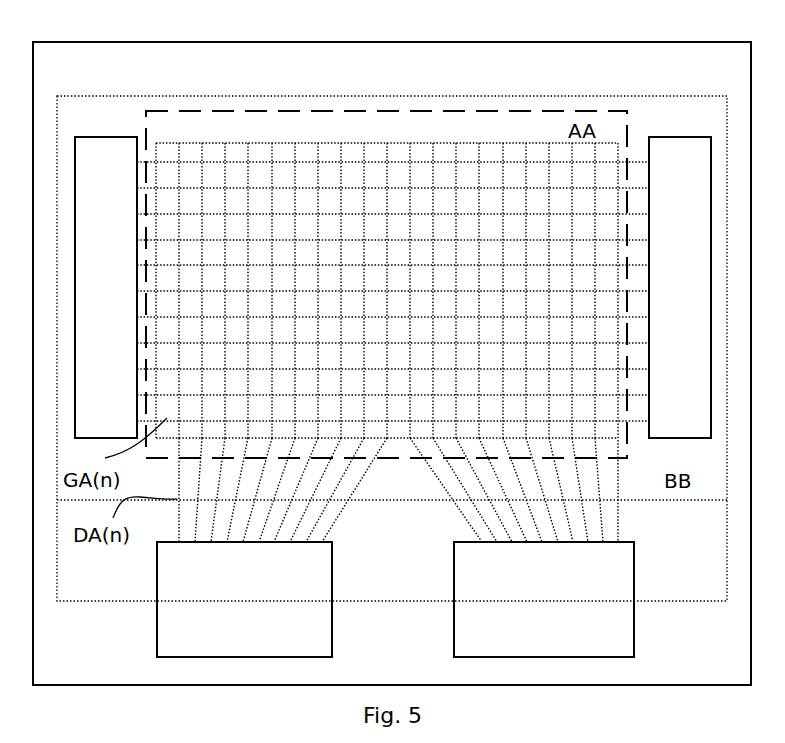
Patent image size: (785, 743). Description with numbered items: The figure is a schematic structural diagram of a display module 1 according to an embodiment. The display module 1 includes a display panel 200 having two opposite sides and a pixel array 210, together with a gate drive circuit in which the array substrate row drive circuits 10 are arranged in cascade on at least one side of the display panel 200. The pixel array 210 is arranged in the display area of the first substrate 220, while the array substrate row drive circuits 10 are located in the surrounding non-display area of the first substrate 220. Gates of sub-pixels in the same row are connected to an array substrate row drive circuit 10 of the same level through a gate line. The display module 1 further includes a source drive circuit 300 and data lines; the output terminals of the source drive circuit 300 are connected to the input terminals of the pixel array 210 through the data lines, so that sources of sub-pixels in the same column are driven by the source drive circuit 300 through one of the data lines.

The display module 1 is at (589, 78).
The array substrate row drive circuit 10 is at (97, 137).
The display panel 200 is at (500, 98).
The pixel array 210 is at (302, 147).
The first substrate 220 is at (413, 127).
The source drive circuit 300 is at (332, 568).